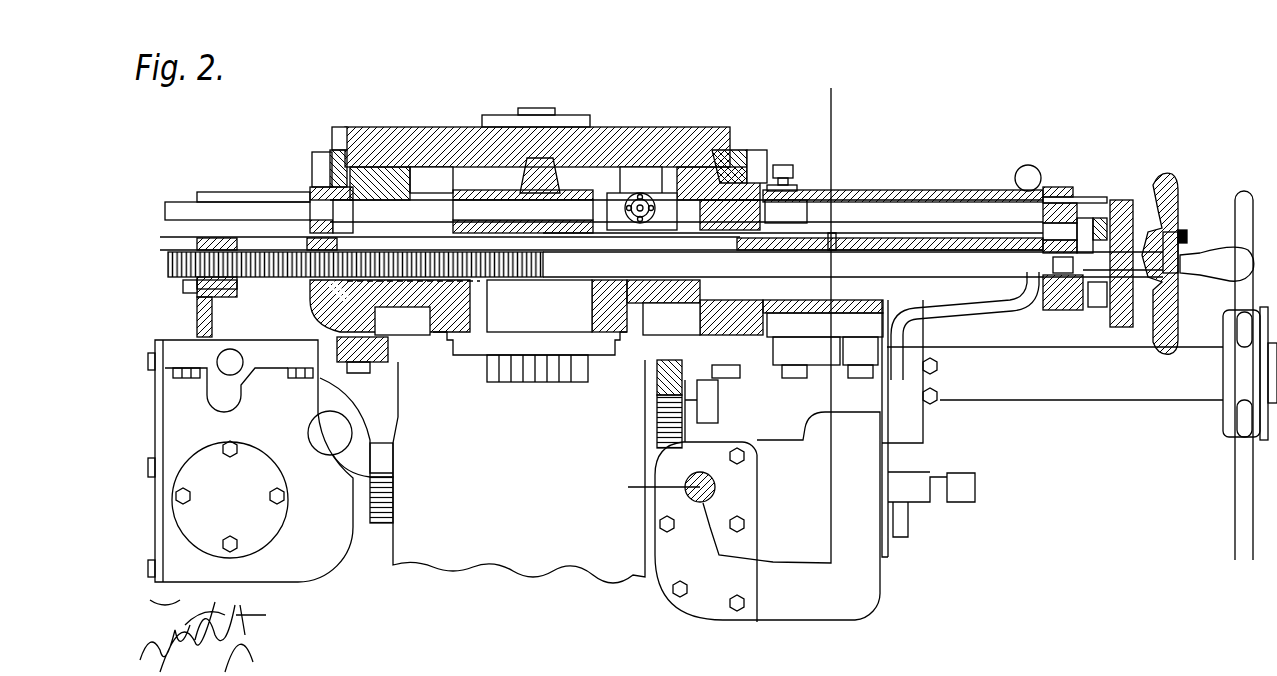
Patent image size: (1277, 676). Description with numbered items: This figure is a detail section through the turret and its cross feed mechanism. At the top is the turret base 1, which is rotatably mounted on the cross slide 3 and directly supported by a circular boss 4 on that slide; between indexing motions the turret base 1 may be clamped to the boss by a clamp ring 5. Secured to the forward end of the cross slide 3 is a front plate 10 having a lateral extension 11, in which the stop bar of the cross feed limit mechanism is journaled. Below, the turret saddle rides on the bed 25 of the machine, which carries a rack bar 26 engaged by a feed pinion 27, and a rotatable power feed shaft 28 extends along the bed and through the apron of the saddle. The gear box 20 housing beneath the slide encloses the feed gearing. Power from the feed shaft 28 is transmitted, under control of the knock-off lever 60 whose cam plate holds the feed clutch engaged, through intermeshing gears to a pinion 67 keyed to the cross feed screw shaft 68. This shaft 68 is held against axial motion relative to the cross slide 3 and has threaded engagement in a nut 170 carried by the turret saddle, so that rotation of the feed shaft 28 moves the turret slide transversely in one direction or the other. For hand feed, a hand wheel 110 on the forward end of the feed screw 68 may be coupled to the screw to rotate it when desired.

The turret base 1 is at (643, 127).
The cross slide 3 is at (865, 186).
The circular boss 4 is at (385, 175).
The clamp ring 5 is at (753, 129).
The front plate 10 is at (1082, 192).
The lateral extension 11 is at (808, 88).
The gear box 20 is at (827, 607).
The bed 25 is at (396, 461).
The rack bar 26 is at (660, 378).
The feed pinion 27 is at (653, 419).
The power feed shaft 28 is at (705, 475).
The knock-off lever 60 is at (990, 313).
The pinion 67 is at (840, 237).
The cross feed screw shaft 68 is at (554, 280).
The hand wheel 110 is at (1177, 175).
The nut 170 is at (190, 252).